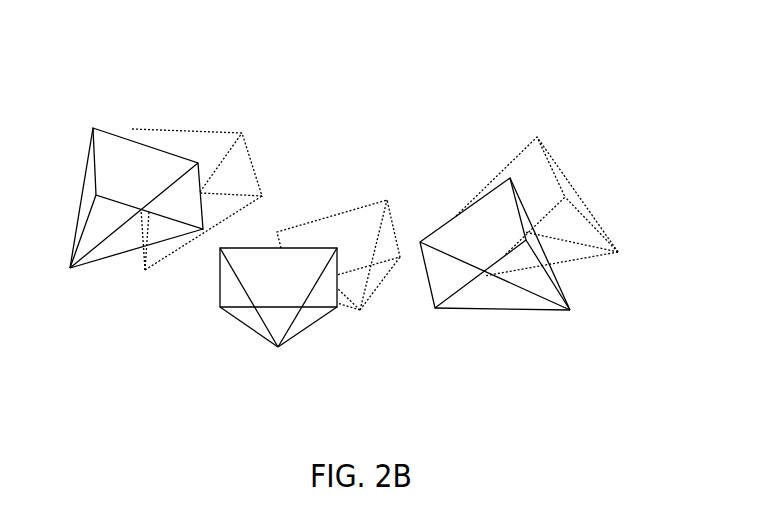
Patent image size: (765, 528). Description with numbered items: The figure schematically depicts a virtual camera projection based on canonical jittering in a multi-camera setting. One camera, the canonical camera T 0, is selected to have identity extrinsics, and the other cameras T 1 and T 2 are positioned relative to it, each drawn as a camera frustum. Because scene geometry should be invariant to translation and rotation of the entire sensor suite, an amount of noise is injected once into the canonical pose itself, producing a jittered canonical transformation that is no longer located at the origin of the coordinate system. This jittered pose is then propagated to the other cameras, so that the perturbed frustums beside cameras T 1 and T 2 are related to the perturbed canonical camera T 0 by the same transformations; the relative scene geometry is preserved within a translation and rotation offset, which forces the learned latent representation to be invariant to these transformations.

The camera frustum at pose T1 1 is at (72, 275).
The camera frustum at pose T0 0 is at (355, 321).
The camera frustum at pose T2 2 is at (615, 260).